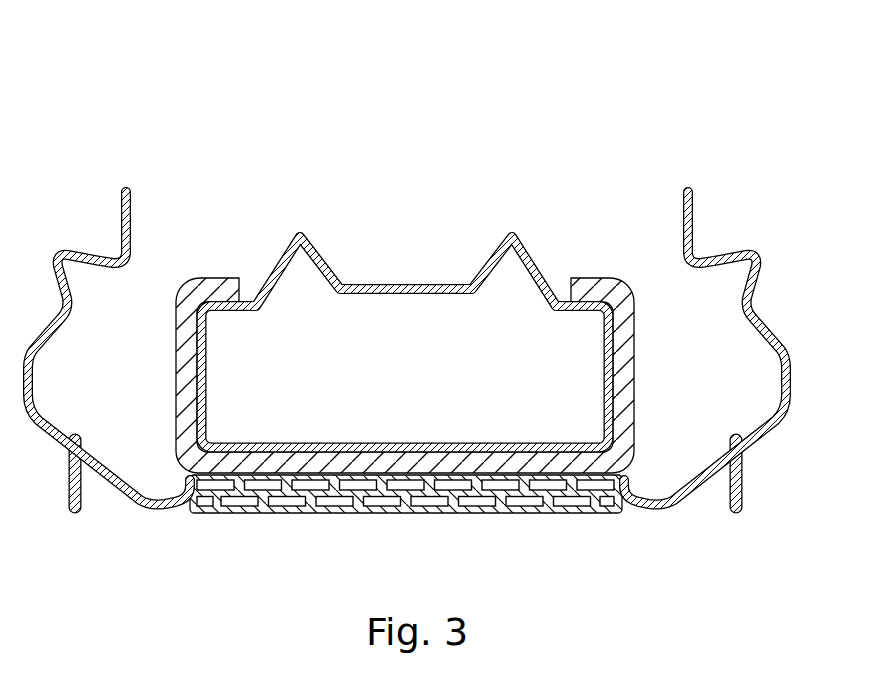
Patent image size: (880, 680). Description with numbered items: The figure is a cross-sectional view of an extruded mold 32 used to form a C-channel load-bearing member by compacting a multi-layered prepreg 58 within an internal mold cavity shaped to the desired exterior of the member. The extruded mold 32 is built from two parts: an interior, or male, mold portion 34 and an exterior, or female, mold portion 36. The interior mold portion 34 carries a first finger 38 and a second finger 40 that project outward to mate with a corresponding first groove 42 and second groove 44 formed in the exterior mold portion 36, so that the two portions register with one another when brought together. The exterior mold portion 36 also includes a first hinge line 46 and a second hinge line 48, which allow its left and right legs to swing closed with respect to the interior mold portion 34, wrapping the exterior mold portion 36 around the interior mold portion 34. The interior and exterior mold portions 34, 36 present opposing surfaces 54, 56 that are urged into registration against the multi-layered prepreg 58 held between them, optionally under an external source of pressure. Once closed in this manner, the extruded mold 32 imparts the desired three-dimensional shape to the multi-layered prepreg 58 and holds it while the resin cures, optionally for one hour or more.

The extruded mold 32 is at (416, 298).
The interior mold portion 34 is at (395, 272).
The exterior mold portion 36 is at (416, 373).
The first finger 38 is at (301, 235).
The second finger 40 is at (516, 240).
The first groove 42 is at (58, 250).
The second groove 44 is at (738, 250).
The first hinge line 46 is at (190, 481).
The second hinge line 48 is at (621, 481).
The opposing surface 54 is at (615, 388).
The opposing surface 56 is at (82, 447).
The multi-layered prepreg 58 is at (405, 287).